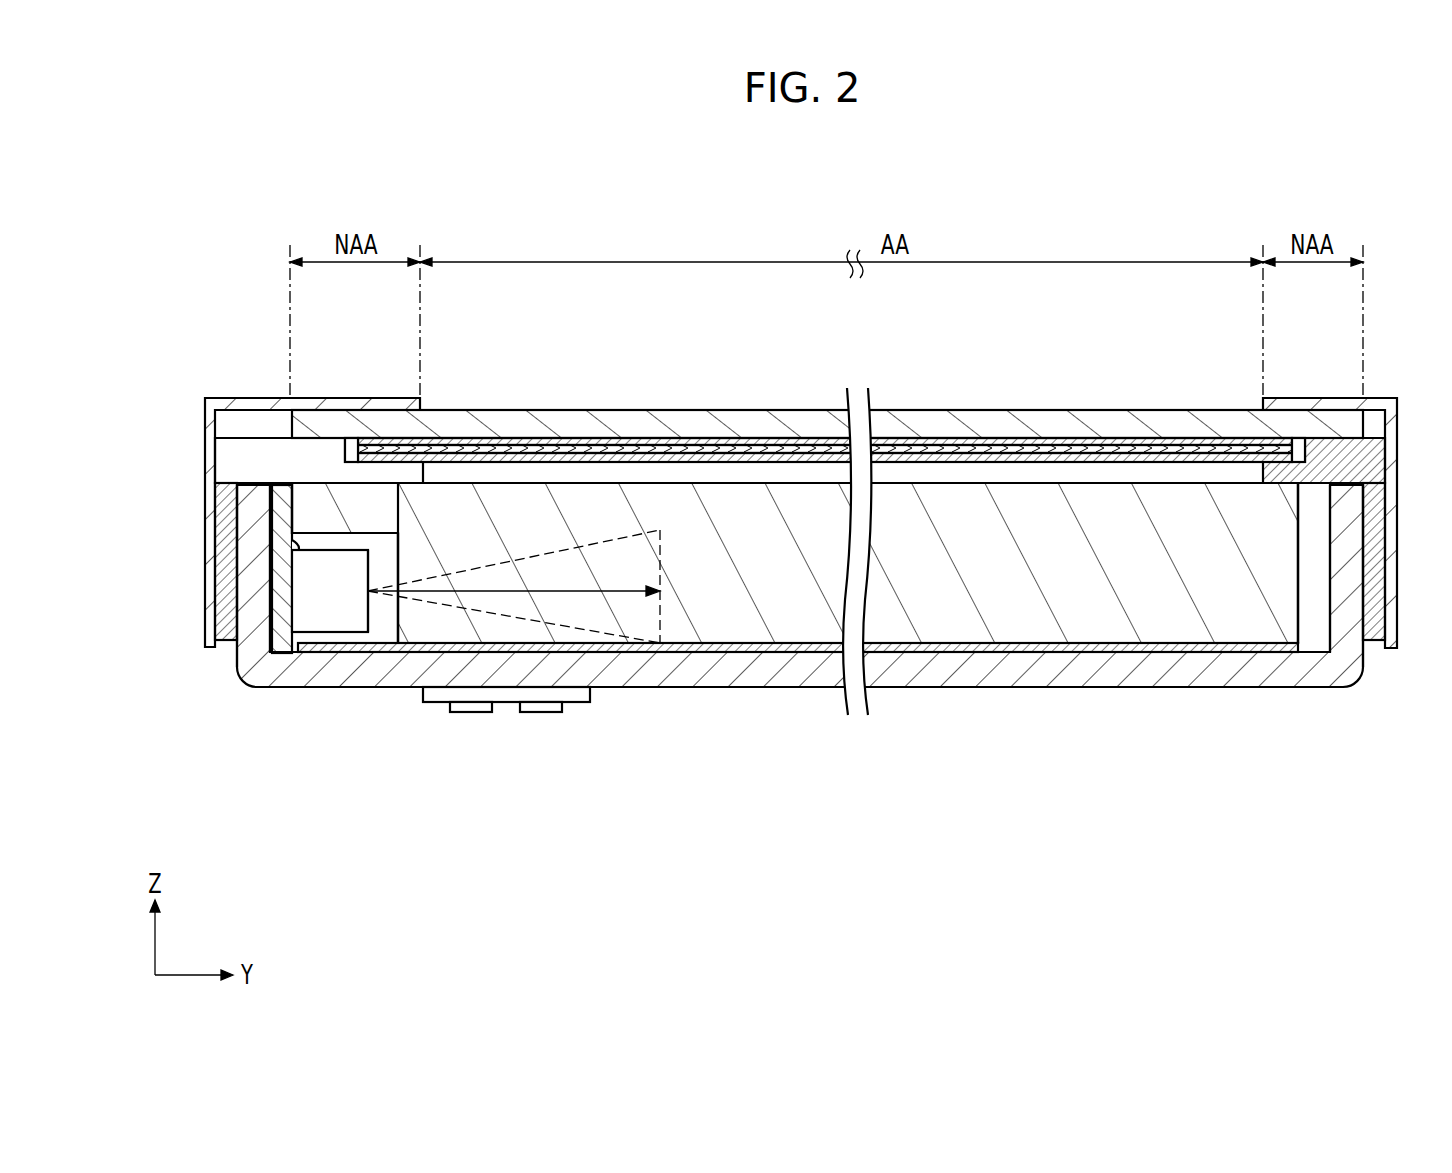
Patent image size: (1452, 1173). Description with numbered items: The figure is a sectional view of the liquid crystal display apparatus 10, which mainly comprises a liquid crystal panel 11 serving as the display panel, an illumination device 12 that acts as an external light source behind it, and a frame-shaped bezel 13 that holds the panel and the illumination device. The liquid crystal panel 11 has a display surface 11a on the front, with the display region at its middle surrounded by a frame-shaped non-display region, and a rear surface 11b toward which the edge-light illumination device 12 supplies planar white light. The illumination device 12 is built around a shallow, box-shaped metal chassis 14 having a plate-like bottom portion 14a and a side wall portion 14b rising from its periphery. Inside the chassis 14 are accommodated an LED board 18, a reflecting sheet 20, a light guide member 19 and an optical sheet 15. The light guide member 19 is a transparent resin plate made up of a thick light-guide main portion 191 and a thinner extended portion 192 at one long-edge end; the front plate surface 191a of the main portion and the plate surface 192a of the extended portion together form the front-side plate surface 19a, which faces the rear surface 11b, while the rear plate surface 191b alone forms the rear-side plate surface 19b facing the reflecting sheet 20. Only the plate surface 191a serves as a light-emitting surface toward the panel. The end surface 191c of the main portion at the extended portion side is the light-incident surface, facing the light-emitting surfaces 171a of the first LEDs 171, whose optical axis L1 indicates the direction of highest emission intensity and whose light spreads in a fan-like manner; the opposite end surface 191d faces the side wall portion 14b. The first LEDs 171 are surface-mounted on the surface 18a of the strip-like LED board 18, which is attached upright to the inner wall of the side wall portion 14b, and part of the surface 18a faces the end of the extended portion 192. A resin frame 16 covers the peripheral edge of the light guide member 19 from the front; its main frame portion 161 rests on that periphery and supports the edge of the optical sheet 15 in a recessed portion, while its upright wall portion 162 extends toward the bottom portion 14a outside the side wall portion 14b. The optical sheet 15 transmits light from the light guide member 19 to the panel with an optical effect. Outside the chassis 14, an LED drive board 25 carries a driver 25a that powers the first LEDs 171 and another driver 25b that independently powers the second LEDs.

The liquid crystal display apparatus 10 is at (1190, 200).
The liquid crystal panel 11 is at (940, 410).
The display surface 11a is at (998, 410).
The rear surface 11b is at (1070, 438).
The illumination device 12 is at (995, 732).
The bezel 13 is at (1382, 398).
The chassis 14 is at (915, 670).
The bottom portion 14a is at (717, 680).
The side wall portion 14b is at (252, 620).
The optical sheet 15 is at (698, 460).
The frame 16 is at (754, 531).
The main frame portion 161 is at (222, 452).
The upright wall portion 162 is at (228, 553).
The first LED 171 is at (330, 612).
The light-emitting surface 171a is at (375, 614).
The LED board 18 is at (281, 652).
The surface of LED board 18a is at (296, 552).
The light guide member 19 is at (1057, 605).
The front-side plate surface of light guide member 19a is at (763, 405).
The rear-side plate surface of light guide member 19b is at (848, 713).
The light-guide main portion 191 is at (1203, 605).
The light-emitting surface 191a is at (505, 483).
The rear plate surface of main portion 191b is at (788, 648).
The light-incident surface 191c is at (396, 612).
The end surface 191d is at (1303, 620).
The extended portion 192 is at (317, 515).
The front plate surface of extended portion 192a is at (318, 481).
The reflecting sheet 20 is at (1117, 652).
The LED drive board 25 is at (590, 690).
The driver 25a is at (472, 712).
The driver 25b is at (542, 712).
The optical axis L1 is at (615, 594).